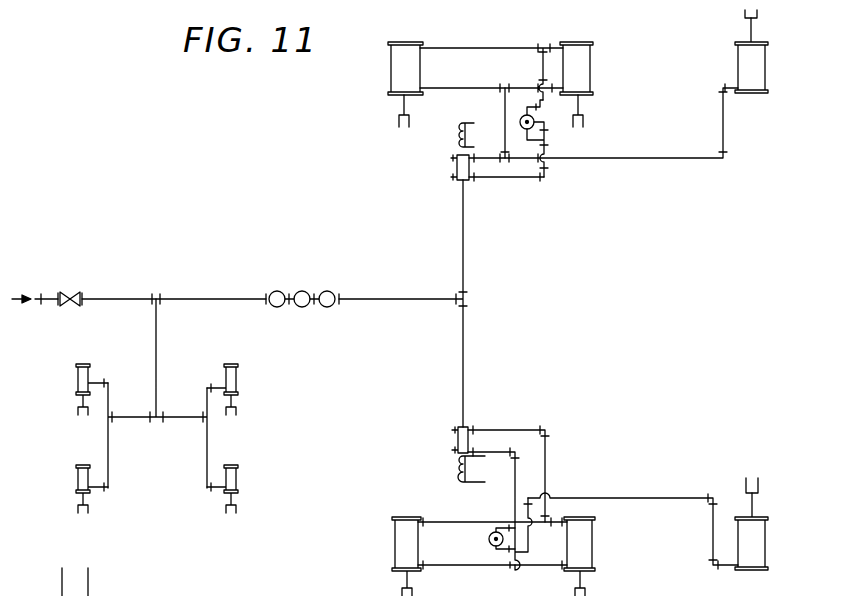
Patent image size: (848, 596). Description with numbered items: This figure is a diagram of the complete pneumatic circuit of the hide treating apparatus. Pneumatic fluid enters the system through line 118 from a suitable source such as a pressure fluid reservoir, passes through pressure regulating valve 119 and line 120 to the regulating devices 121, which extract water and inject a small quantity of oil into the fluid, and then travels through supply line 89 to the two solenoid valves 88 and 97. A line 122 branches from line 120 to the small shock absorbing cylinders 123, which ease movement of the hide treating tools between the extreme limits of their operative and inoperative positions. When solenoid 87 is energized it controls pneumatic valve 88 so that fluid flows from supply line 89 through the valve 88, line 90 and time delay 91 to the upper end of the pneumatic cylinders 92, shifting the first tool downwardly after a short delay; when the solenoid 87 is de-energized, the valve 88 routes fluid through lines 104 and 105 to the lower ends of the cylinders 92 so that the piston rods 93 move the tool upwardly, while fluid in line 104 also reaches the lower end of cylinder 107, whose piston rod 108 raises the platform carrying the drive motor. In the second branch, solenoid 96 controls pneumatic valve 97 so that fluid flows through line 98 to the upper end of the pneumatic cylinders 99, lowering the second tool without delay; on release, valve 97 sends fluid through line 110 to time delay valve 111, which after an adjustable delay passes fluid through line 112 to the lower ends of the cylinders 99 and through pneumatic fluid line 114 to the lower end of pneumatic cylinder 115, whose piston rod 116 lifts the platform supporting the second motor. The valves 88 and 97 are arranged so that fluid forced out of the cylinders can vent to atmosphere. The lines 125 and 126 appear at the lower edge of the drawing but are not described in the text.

The solenoid 87 is at (458, 130).
The pneumatic valve 88 is at (456, 177).
The supply line 89 is at (400, 300).
The line 90 is at (516, 178).
The time delay 91 is at (520, 121).
The pneumatic cylinders 92 is at (403, 50).
The piston rod 93 is at (404, 108).
The solenoid 96 is at (457, 467).
The pneumatic valve 97 is at (457, 439).
The line 98 is at (520, 430).
The pneumatic cylinders 99 is at (395, 550).
The line 104 is at (485, 156).
The line 105 is at (505, 97).
The cylinder 107 is at (748, 66).
The piston rod 108 is at (752, 32).
The line 110 is at (513, 499).
The time delay valve 111 is at (488, 543).
The line 112 is at (517, 562).
The pneumatic fluid line 114 is at (605, 494).
The pneumatic cylinder 115 is at (747, 572).
The piston rod 116 is at (752, 505).
The line 118 is at (41, 294).
The pressure regulating valve 119 is at (72, 293).
The line 120 is at (186, 299).
The regulating devices 121 is at (325, 291).
The line 122 is at (157, 353).
The shock absorbing cylinders 123 is at (78, 383).
The line 125 is at (41, 582).
The line 126 is at (114, 582).